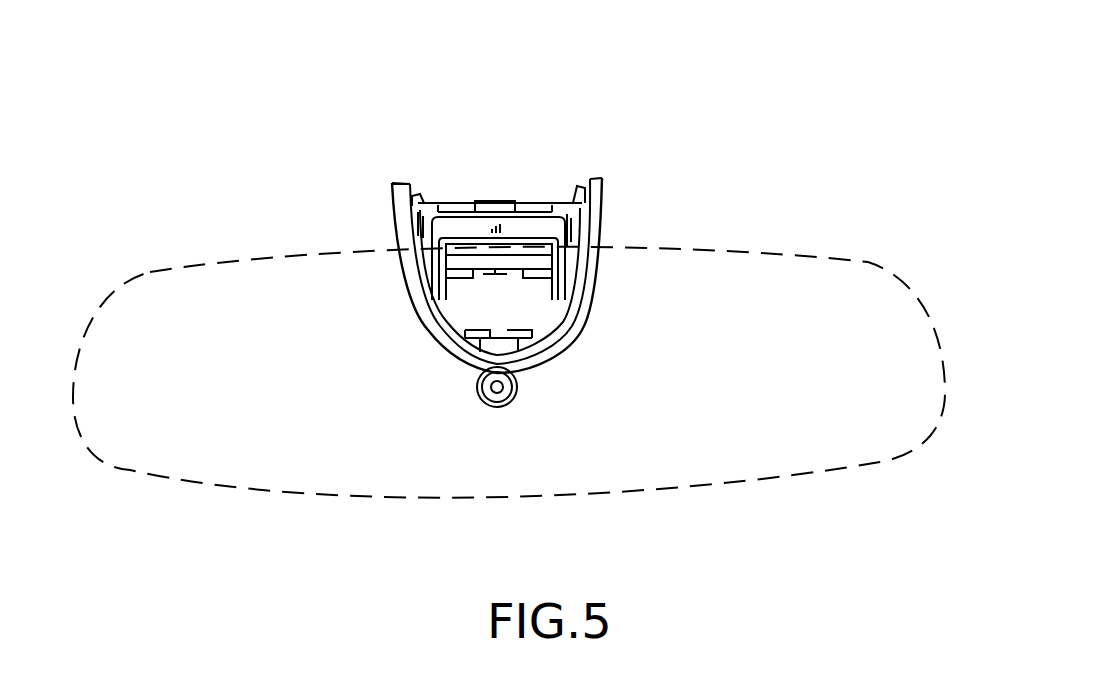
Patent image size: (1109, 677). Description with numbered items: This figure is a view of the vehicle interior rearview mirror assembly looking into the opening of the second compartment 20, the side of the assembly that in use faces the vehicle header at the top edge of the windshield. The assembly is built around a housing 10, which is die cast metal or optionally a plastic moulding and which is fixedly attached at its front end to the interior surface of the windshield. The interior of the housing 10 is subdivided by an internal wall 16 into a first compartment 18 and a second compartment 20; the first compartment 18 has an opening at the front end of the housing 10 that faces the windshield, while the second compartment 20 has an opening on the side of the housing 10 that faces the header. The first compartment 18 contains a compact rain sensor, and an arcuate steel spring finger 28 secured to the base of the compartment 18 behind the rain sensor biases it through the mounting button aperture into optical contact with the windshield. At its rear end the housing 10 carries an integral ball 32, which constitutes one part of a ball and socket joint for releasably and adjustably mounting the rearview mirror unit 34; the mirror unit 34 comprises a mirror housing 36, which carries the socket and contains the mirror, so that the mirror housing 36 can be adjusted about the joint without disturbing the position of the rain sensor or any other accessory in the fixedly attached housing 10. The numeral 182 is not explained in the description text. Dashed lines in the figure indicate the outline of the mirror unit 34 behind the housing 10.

The housing 10 is at (570, 347).
The internal wall 16 is at (540, 227).
The first compartment 18 is at (543, 185).
The housing top edge 182 is at (441, 170).
The second compartment 20 is at (530, 304).
The arcuate steel spring finger 28 is at (495, 185).
The ball 32 is at (499, 389).
The rearview mirror unit 34 is at (883, 260).
The mirror housing 36 is at (507, 405).